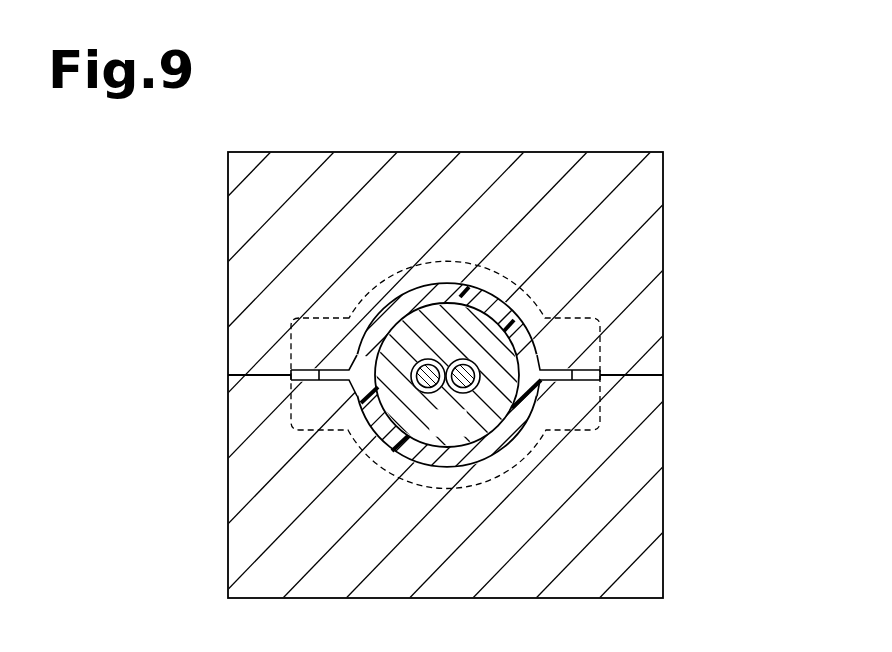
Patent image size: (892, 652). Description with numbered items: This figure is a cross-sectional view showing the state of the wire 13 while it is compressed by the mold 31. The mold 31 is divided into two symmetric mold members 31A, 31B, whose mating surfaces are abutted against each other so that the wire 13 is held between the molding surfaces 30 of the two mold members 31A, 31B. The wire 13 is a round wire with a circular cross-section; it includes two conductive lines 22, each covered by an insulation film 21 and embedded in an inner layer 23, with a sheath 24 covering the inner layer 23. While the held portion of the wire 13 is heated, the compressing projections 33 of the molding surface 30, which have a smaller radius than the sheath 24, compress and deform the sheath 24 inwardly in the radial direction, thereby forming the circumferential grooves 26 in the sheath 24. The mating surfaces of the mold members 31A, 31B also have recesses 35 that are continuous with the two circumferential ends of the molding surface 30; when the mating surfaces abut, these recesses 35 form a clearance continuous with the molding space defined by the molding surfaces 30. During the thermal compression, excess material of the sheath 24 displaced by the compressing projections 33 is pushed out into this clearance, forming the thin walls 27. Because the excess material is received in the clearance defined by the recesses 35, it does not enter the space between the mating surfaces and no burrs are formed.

The wire 13 is at (524, 437).
The insulation film 21 is at (368, 438).
The conductive lines 22 is at (440, 385).
The inner layer 23 is at (405, 458).
The sheath 24 is at (512, 333).
The grooves 26 is at (493, 290).
The thin walls 27 is at (555, 380).
The molding surface 30 is at (383, 325).
The mold 31 is at (765, 340).
The mold member 31A is at (665, 390).
The mold member 31B is at (665, 357).
The compressing projections 33 is at (453, 283).
The recesses 35 is at (601, 368).